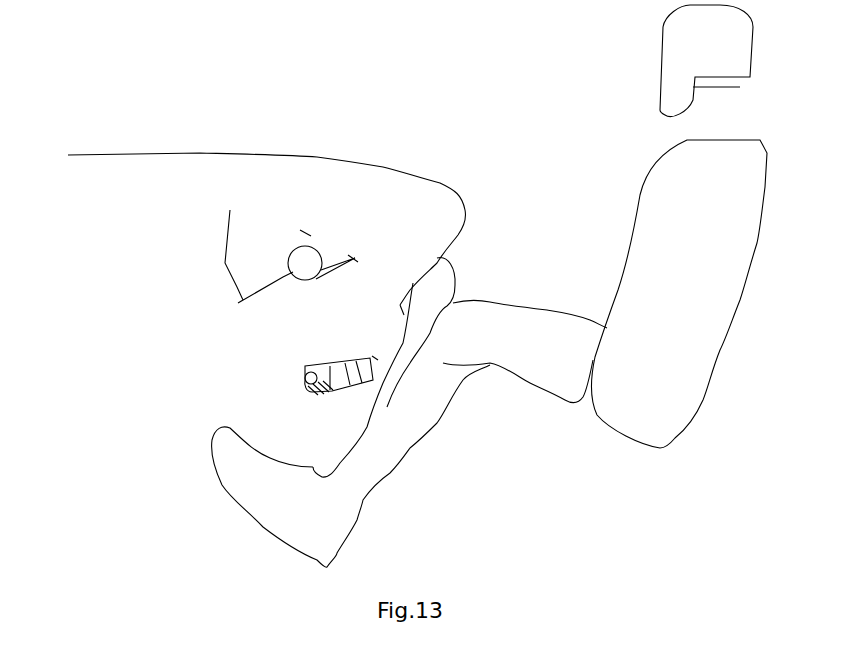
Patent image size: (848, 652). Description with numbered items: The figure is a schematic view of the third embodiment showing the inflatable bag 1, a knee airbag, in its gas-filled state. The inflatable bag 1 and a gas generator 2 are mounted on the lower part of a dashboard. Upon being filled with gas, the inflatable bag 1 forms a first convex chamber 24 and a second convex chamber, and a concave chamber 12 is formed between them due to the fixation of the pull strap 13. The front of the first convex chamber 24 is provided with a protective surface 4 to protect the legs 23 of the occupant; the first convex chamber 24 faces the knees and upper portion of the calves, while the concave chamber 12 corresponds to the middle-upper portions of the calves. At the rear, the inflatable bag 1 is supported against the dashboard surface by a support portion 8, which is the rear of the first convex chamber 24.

The inflatable bag 1 is at (433, 293).
The gas generator 2 is at (307, 370).
The protective surface 4 is at (440, 307).
The support portion 8 is at (403, 307).
The concave chamber 12 is at (383, 363).
The pull strap 13 is at (375, 355).
The legs 23 is at (390, 430).
The first convex chamber 24 is at (417, 307).